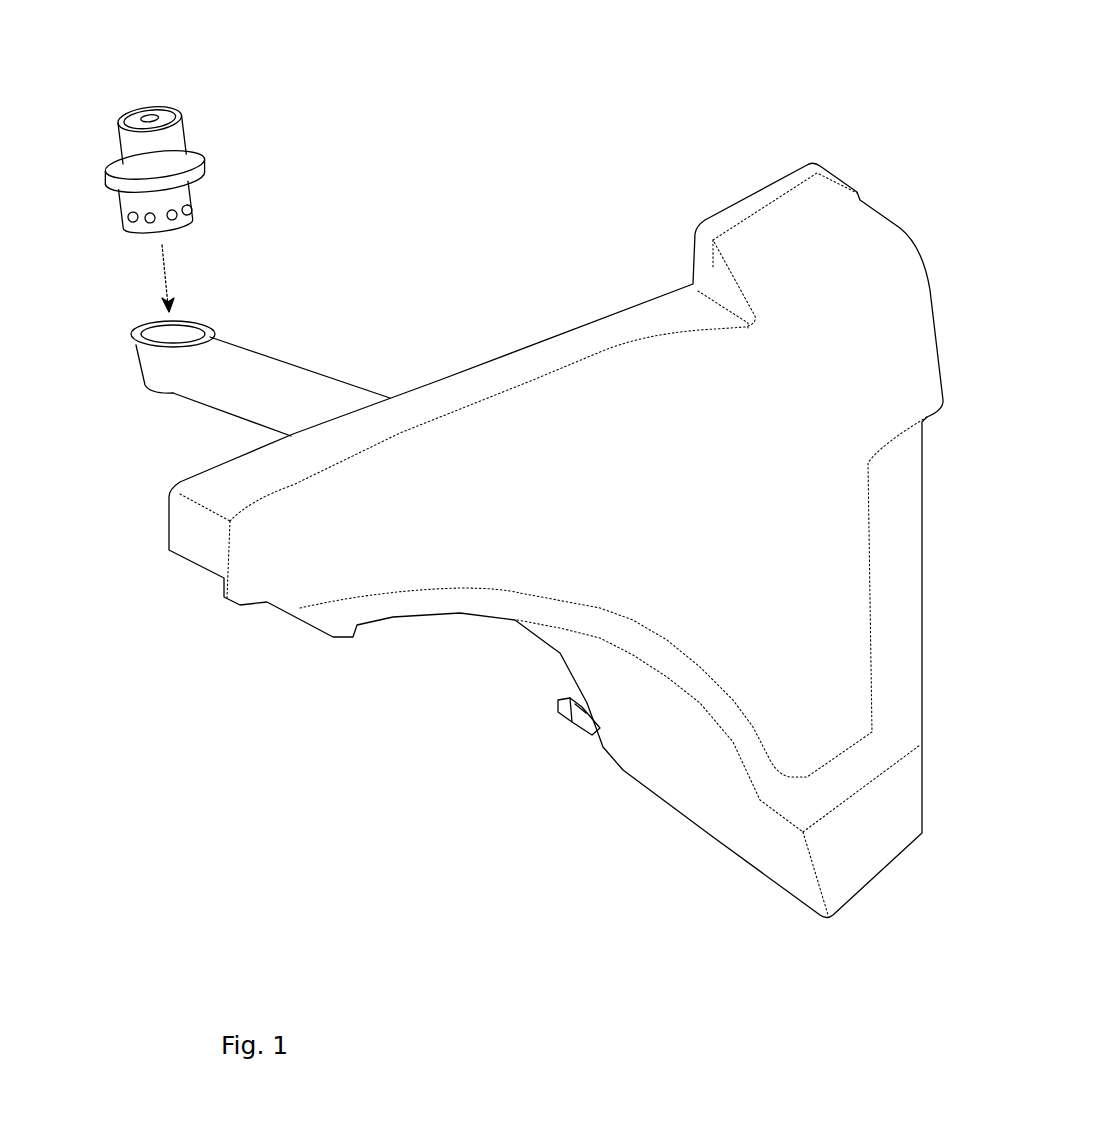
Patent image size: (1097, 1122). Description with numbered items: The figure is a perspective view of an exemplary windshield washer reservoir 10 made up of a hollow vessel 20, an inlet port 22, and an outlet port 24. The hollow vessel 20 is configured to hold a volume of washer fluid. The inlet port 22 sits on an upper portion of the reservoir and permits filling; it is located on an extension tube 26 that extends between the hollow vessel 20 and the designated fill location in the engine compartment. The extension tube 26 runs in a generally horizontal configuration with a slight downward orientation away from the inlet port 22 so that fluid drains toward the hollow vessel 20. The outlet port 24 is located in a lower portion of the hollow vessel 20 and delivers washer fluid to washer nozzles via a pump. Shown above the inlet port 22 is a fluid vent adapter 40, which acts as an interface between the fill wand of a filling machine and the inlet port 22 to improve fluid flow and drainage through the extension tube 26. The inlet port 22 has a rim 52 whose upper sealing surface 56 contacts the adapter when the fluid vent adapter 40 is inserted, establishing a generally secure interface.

The windshield washer reservoir 10 is at (740, 116).
The hollow vessel 20 is at (907, 265).
The inlet port 22 is at (183, 330).
The outlet port 24 is at (558, 715).
The extension tube 26 is at (288, 390).
The fluid vent adapter 40 is at (171, 92).
The rim 52 is at (135, 340).
The upper sealing surface 56 is at (135, 335).